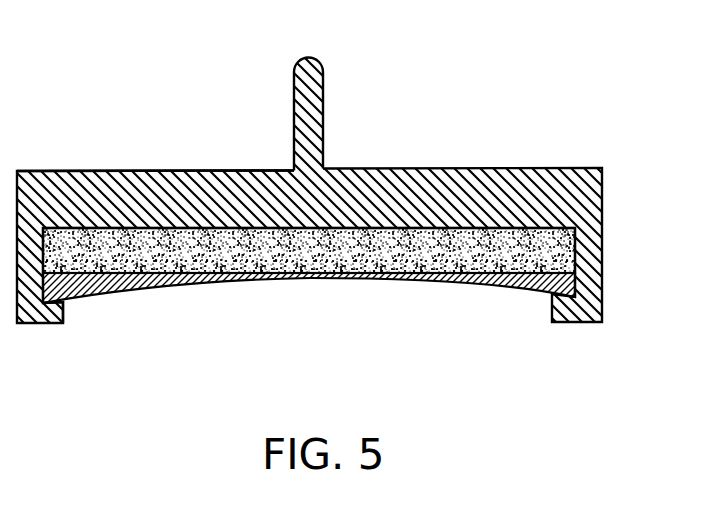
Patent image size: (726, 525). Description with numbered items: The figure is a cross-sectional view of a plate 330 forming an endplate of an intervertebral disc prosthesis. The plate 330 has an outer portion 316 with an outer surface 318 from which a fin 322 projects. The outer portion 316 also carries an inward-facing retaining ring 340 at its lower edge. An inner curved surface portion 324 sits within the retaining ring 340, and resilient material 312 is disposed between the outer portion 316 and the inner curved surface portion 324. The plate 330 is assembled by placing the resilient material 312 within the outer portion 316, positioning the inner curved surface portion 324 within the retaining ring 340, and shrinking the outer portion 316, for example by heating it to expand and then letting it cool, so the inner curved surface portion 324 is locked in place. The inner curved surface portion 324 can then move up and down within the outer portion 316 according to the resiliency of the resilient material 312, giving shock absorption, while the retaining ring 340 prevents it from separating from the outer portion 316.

The plate 330 is at (518, 86).
The outer portion 316 is at (590, 190).
The outer surface 318 is at (118, 158).
The fin 322 is at (340, 114).
The resilient material 312 is at (548, 250).
The inner curved surface portion 324 is at (220, 301).
The inward-facing retaining ring 340 is at (80, 313).